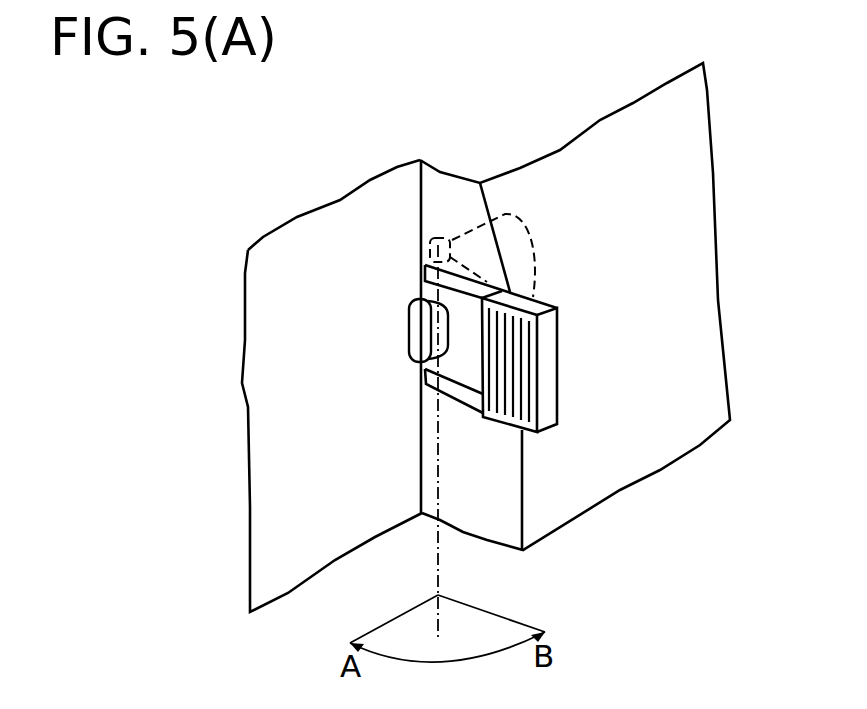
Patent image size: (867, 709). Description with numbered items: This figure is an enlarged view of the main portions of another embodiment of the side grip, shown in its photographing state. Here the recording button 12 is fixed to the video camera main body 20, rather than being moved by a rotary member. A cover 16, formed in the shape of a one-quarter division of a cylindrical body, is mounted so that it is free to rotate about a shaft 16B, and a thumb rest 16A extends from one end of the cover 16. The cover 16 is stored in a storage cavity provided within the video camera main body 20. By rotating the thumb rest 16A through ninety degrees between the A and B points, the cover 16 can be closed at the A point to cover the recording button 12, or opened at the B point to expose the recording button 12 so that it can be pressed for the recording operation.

The video camera main body 20 is at (342, 201).
The cover 16 is at (559, 336).
The thumb rest 16A is at (495, 418).
The shaft 16B is at (433, 240).
The recording button 12 is at (452, 390).